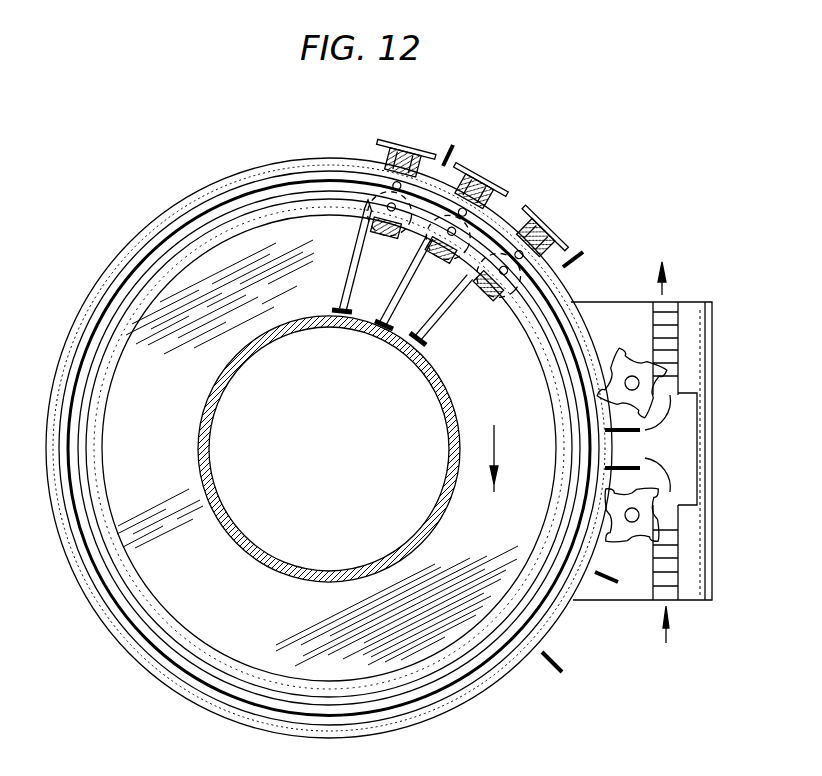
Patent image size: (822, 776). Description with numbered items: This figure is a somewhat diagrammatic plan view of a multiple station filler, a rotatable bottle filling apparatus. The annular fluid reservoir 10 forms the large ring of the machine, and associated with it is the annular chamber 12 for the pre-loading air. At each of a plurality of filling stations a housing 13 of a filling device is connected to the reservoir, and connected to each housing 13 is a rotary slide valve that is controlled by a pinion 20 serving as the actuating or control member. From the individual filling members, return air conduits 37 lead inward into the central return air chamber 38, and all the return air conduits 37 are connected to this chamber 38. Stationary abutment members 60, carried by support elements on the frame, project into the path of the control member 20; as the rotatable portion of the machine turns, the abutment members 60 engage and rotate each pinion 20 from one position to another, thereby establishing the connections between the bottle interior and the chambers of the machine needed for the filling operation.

The annular fluid reservoir 10 is at (100, 533).
The annular chamber 12 is at (110, 288).
The housing 13 is at (506, 210).
The pinion 20 is at (488, 184).
The return air conduit 37 is at (447, 297).
The central return air chamber 38 is at (281, 547).
The abutment member 60 is at (453, 150).